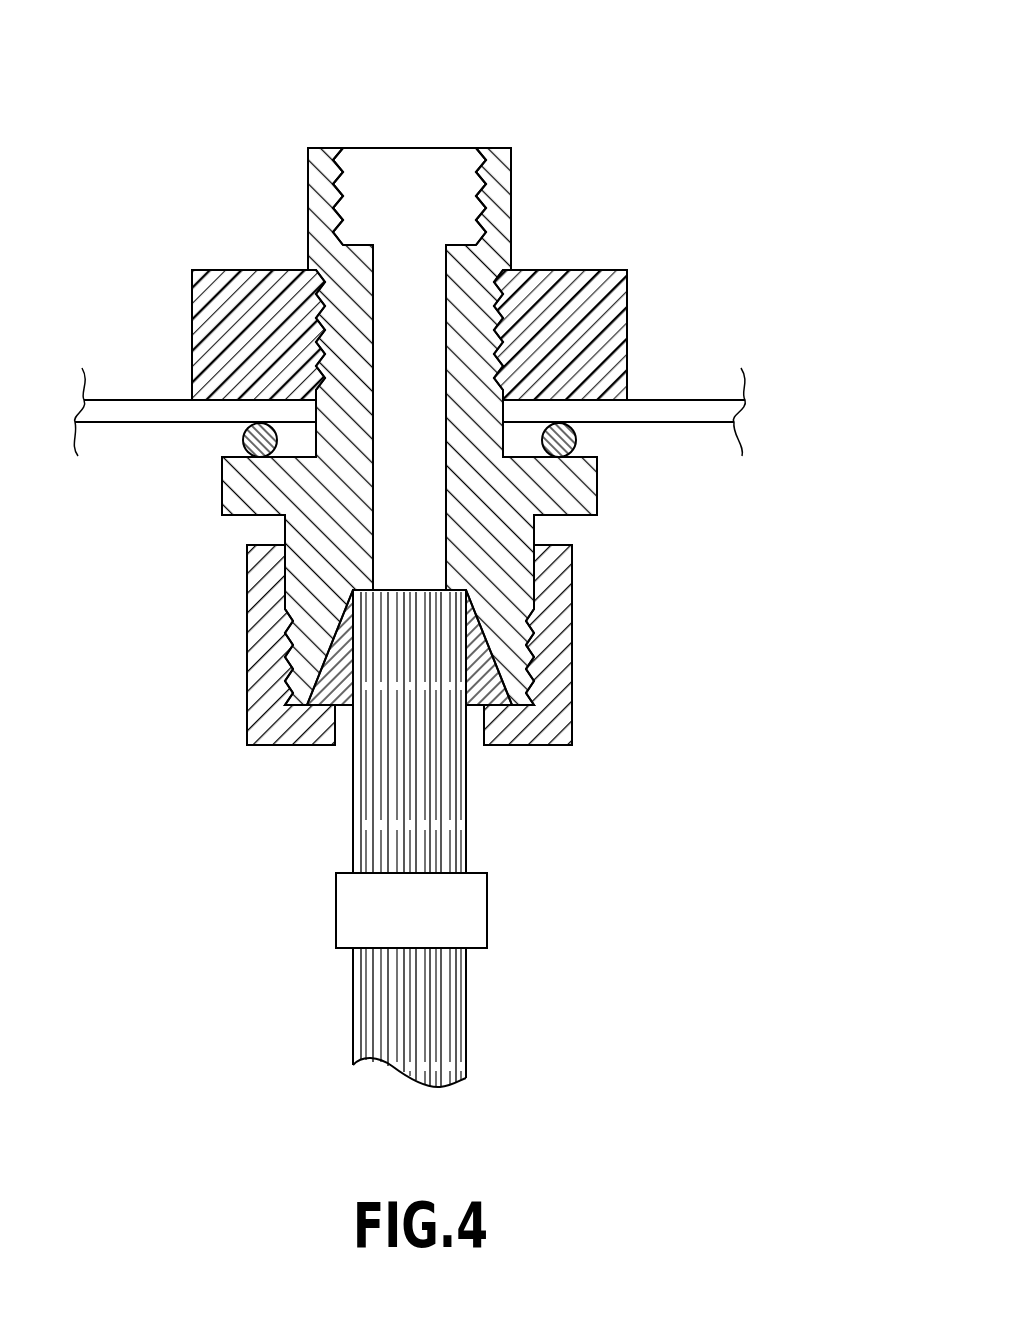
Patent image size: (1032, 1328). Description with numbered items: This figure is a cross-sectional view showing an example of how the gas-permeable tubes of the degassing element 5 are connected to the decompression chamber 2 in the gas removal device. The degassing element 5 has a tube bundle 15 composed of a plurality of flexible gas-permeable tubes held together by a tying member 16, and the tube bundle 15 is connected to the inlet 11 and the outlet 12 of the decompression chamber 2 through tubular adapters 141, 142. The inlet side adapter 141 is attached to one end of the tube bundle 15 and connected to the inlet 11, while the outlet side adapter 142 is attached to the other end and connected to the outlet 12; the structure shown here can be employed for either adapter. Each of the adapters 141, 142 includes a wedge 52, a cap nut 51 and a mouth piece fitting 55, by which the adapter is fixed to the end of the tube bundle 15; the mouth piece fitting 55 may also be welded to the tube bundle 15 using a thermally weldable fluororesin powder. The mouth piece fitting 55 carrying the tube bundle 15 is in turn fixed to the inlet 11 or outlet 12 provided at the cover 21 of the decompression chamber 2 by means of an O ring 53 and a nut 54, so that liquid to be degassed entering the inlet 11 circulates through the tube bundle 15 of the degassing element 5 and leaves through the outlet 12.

The decompression chamber 2 is at (415, 383).
The cover 21 is at (409, 411).
The degassing element 5 is at (503, 543).
The inlet 11 is at (460, 365).
The outlet 12 is at (402, 122).
The tube bundle 15 is at (467, 990).
The tying member 16 is at (336, 912).
The cap nut 51 is at (566, 628).
The wedge 52 is at (332, 682).
The O ring 53 is at (247, 440).
The nut 54 is at (217, 298).
The mouth piece fitting 55 is at (409, 352).
The inlet side adapter 141 is at (586, 582).
The outlet side adapter 142 is at (562, 680).